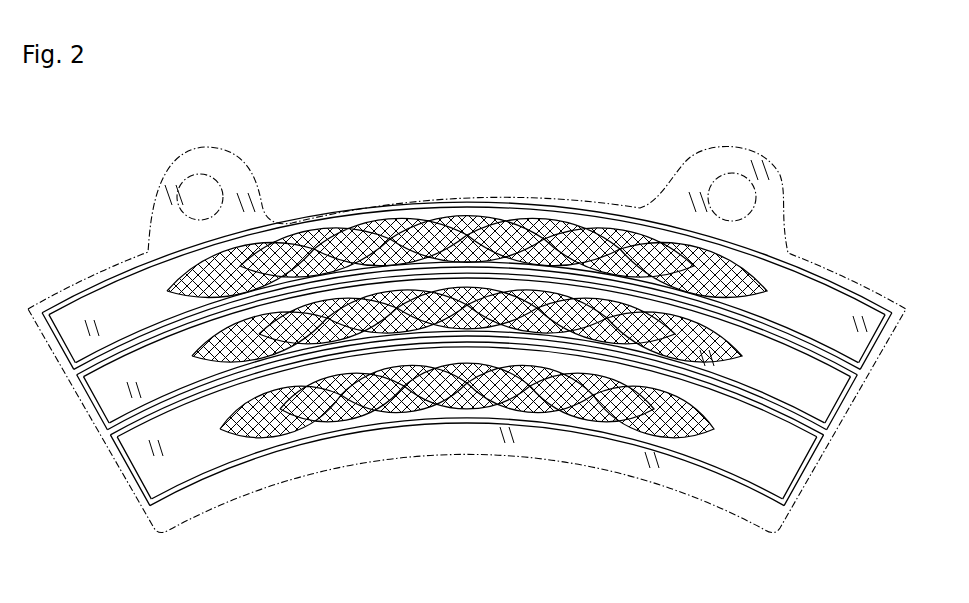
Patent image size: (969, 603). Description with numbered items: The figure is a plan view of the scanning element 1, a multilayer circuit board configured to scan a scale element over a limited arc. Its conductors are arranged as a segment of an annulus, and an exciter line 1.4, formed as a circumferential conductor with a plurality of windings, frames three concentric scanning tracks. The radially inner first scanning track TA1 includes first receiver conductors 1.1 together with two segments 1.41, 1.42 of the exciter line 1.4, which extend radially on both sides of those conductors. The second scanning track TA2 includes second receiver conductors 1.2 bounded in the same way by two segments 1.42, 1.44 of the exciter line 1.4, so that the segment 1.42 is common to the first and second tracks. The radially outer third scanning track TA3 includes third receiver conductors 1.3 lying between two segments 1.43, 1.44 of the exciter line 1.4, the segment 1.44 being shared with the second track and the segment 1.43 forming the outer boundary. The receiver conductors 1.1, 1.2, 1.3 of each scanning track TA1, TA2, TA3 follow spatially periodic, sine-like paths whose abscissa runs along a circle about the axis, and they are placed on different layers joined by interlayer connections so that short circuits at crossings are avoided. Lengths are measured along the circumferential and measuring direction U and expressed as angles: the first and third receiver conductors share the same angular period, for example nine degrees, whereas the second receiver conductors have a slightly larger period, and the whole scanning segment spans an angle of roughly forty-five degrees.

The scanning element 1 is at (150, 207).
The first receiver conductors 1.1 is at (217, 456).
The second receiver conductors 1.2 is at (190, 376).
The third receiver conductors 1.3 is at (166, 312).
The exciter line 1.4 is at (96, 428).
The segment of the exciter line 1.41 is at (284, 450).
The segment of the exciter line 1.42 is at (213, 395).
The segment of the exciter line 1.43 is at (294, 219).
The segment of the exciter line 1.44 is at (184, 334).
The first scanning track TA1 is at (768, 452).
The second scanning track TA2 is at (792, 384).
The third scanning track TA3 is at (827, 324).
The circumferential and measuring direction U is at (535, 140).